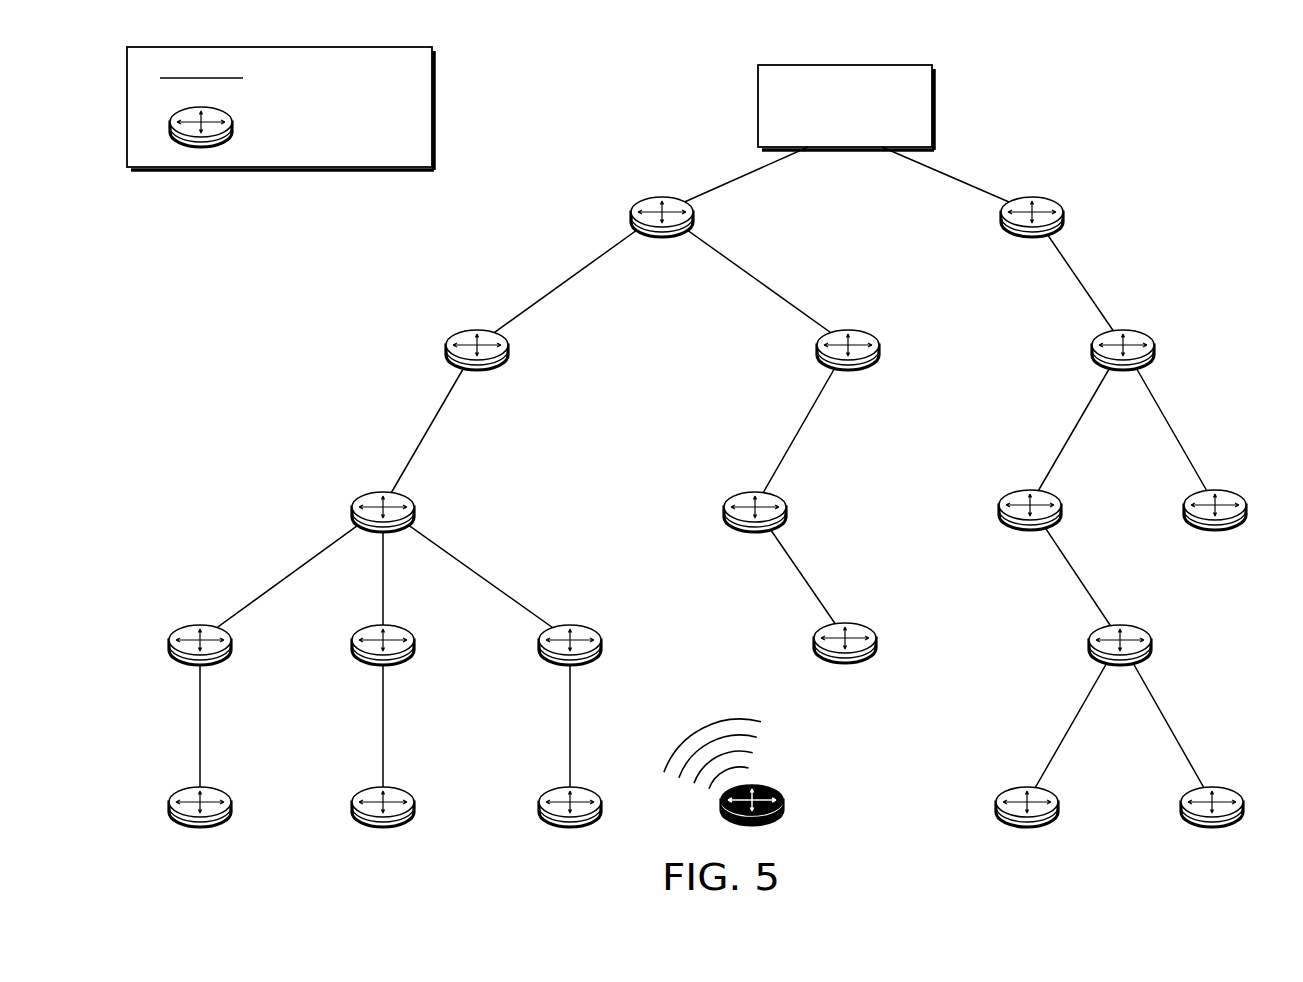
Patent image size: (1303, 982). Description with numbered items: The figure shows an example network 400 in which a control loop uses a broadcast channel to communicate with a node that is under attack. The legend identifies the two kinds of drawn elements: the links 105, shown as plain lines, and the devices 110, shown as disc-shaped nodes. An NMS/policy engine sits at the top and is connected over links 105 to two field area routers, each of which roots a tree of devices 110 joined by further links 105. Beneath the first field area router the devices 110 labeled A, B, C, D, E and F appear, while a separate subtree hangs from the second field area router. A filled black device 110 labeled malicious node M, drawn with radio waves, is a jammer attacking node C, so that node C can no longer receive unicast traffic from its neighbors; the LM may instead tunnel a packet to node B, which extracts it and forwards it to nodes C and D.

The links 105 is at (687, 434).
The device 110 is at (707, 467).
The computer network 400 is at (1212, 110).